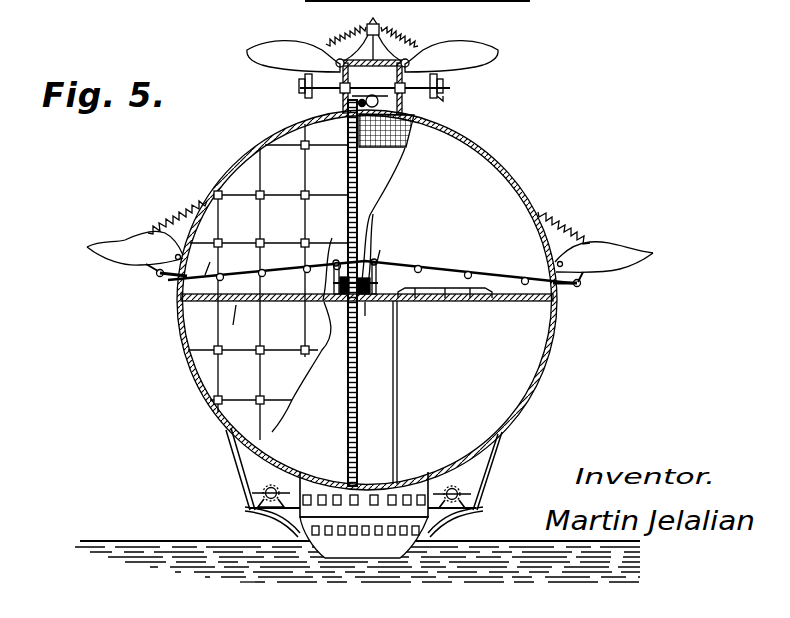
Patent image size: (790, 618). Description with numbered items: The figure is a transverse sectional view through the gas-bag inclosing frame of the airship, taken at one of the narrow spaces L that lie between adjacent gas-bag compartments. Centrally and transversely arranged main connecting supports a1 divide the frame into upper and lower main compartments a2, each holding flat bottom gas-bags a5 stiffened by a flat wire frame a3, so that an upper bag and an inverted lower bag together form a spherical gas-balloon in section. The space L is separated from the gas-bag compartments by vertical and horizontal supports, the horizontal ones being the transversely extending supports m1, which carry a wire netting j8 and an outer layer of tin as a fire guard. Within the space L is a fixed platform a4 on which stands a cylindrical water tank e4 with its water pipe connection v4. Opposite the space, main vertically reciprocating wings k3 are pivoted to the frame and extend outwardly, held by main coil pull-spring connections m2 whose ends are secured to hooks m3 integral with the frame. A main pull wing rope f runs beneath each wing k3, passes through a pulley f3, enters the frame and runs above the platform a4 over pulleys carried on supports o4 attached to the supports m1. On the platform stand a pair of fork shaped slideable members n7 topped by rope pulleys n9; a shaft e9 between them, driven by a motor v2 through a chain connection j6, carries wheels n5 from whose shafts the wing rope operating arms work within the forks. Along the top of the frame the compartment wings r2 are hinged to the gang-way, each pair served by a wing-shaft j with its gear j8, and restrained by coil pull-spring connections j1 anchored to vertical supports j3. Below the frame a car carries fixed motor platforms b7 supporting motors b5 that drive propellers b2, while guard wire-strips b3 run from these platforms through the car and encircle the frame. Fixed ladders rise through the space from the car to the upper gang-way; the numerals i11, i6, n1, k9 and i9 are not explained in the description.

The space L is at (503, 193).
The main pull wing rope f is at (150, 273).
The central ladder mast i11 is at (357, 372).
The wing-shaft j is at (340, 95).
The vertical supports j3 is at (372, 22).
The coil pull-spring connections j1 is at (341, 41).
The vertically reciprocating wings r2 is at (266, 53).
The propeller shaft i6 is at (375, 81).
The shaft end propellers n1 is at (305, 78).
The wheel n5 is at (440, 100).
The integral gear j8 is at (408, 146).
The link k9 is at (347, 119).
The main compartments a2 is at (244, 171).
The gas-bags a5 is at (268, 272).
The transversely extending supports m1 is at (257, 353).
The flat wire frame a3 is at (215, 295).
The main connecting supports a1 is at (182, 312).
The shaft e9 is at (338, 290).
The rope pulleys n9 is at (385, 248).
The chain connection j6 is at (326, 340).
The supports o4 is at (272, 262).
The rod hangers i9 is at (420, 267).
The fork shaped slideable members n7 is at (333, 279).
The cylindrical water tank e4 is at (416, 301).
The motor v2 is at (374, 317).
The water pipe connection v4 is at (398, 366).
The main vertically reciprocating wings k3 is at (108, 249).
The main coil pull-spring connections m2 is at (186, 213).
The hooks m3 is at (540, 211).
The pulley f3 is at (160, 280).
The fixed platform a4 is at (297, 529).
The propellers b2 is at (250, 494).
The fixed motor platforms b7 is at (248, 510).
The motors b5 is at (266, 487).
The guard wire-strips b3 is at (444, 517).